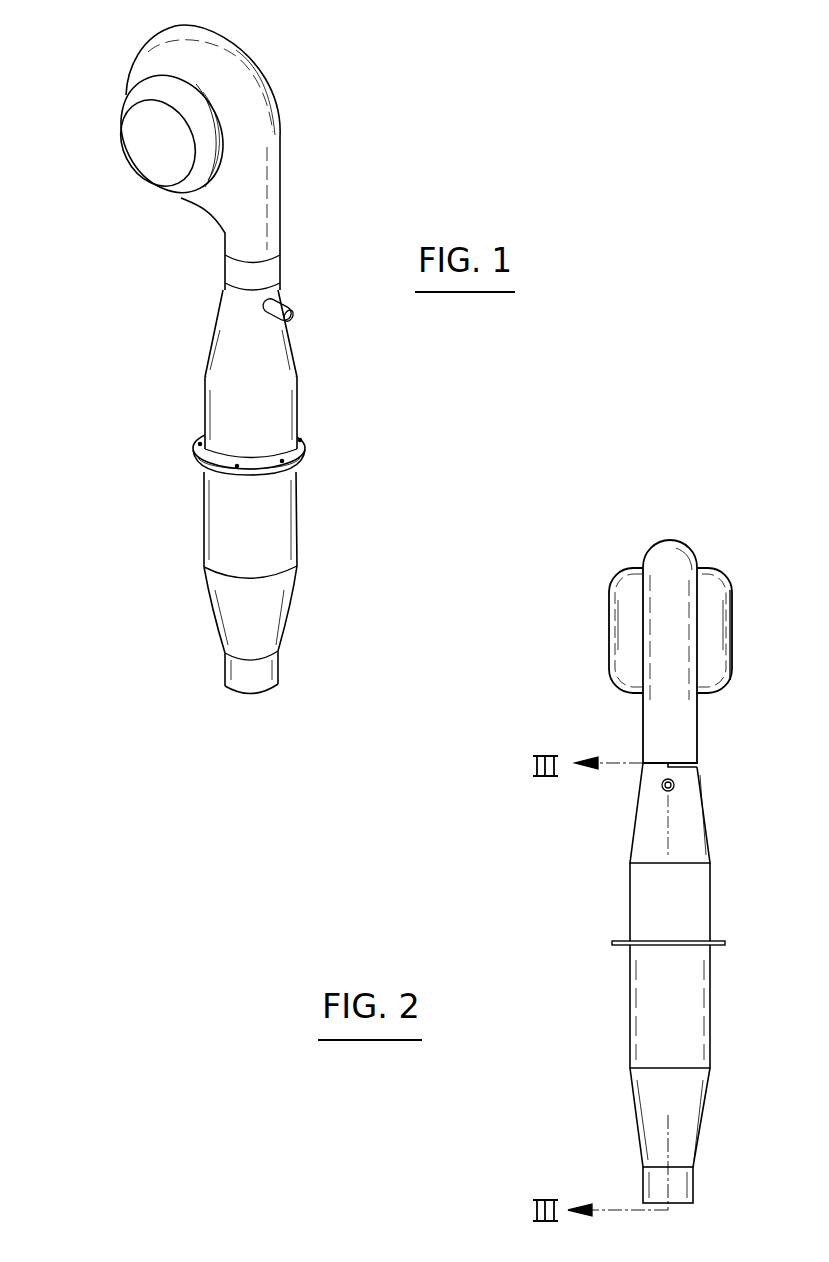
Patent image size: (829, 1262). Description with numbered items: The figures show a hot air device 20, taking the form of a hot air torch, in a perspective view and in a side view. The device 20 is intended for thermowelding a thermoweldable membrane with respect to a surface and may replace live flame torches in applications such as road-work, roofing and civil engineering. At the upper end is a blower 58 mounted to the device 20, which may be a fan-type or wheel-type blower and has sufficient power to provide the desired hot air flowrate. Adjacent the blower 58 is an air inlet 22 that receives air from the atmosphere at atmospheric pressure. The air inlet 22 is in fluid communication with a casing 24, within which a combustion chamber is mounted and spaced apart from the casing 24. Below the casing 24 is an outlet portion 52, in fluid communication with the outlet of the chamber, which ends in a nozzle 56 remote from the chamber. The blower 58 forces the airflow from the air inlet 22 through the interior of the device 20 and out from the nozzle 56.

In FIG. 1, the hot air device 20 is at (322, 80).
In FIG. 2, the hot air device 20 is at (564, 602).
In FIG. 1, the blower 58 is at (146, 52).
In FIG. 2, the blower 58 is at (669, 552).
In FIG. 1, the air inlet 22 is at (148, 131).
In FIG. 1, the casing 24 is at (270, 413).
In FIG. 2, the casing 24 is at (648, 825).
In FIG. 1, the outlet portion 52 is at (228, 518).
In FIG. 2, the outlet portion 52 is at (640, 978).
In FIG. 1, the nozzle 56 is at (272, 668).
In FIG. 2, the nozzle 56 is at (688, 1180).